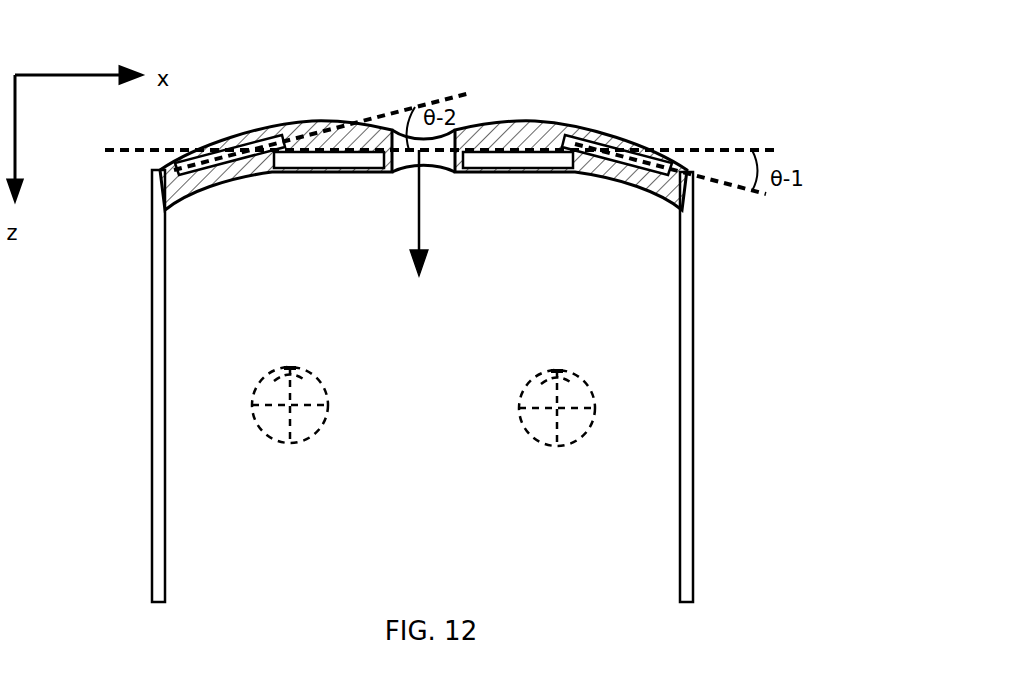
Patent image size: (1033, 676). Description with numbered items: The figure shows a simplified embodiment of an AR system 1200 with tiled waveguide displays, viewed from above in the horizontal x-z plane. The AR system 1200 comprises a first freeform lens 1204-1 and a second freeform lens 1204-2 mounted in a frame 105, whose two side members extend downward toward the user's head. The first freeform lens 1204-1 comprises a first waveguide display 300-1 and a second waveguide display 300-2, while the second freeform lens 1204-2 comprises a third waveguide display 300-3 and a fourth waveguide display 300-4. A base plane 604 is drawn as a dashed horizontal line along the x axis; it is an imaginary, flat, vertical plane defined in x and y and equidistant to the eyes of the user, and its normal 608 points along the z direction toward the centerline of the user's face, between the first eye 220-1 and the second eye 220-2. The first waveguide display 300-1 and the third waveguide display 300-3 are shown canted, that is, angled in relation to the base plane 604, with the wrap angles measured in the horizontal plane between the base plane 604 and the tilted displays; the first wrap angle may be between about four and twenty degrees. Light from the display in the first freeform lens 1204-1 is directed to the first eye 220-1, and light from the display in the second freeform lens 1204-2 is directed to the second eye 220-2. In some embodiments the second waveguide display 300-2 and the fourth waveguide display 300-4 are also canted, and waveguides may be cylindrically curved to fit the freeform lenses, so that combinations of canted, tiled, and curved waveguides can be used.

The AR system 1200 is at (759, 67).
The frame 105 is at (166, 366).
The first freeform lens 1204-1 is at (579, 138).
The second freeform lens 1204-2 is at (276, 143).
The first waveguide display 300-1 is at (630, 165).
The second waveguide display 300-2 is at (540, 162).
The third waveguide display 300-3 is at (185, 175).
The fourth waveguide display 300-4 is at (372, 160).
The base plane 604 is at (775, 150).
The normal 608 is at (414, 217).
The first eye 220-1 is at (522, 423).
The second eye 220-2 is at (318, 427).